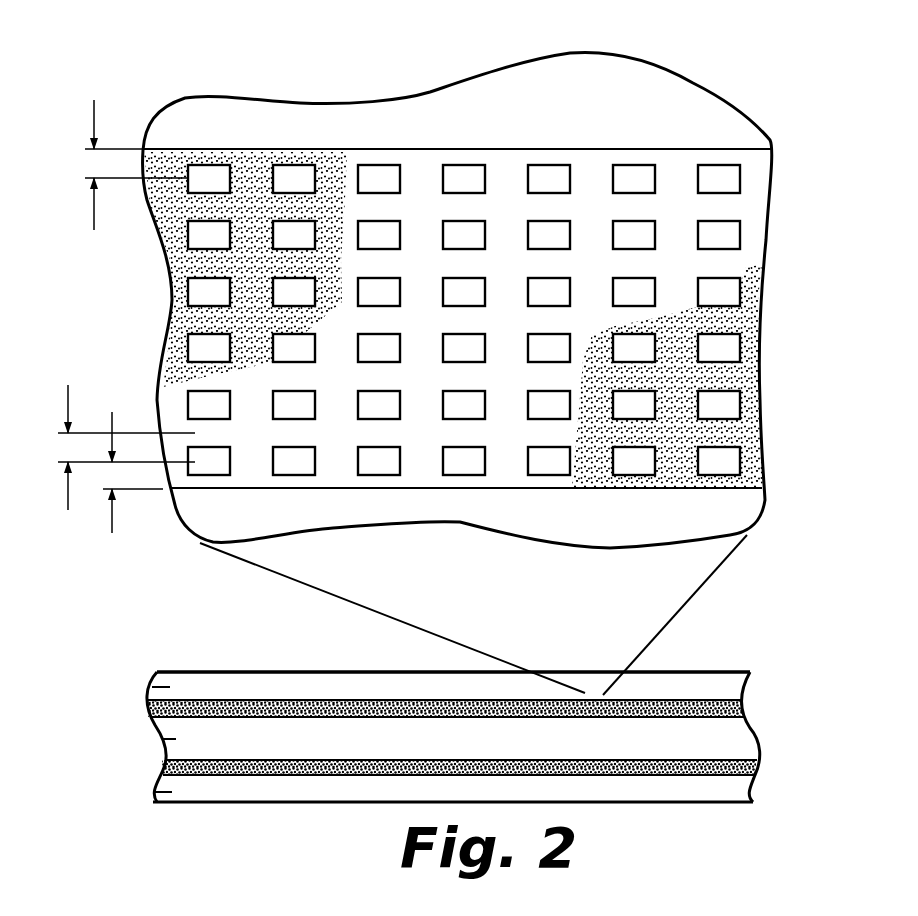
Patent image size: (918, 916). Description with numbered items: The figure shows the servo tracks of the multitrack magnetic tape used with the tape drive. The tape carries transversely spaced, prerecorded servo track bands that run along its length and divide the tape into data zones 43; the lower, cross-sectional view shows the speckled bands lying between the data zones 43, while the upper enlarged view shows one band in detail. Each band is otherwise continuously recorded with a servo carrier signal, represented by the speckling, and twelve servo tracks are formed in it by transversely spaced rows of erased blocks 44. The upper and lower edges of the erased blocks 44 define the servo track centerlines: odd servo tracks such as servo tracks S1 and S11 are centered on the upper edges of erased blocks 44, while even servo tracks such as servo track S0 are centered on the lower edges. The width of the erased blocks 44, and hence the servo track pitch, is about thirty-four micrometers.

The data zones 43 is at (172, 739).
The erased blocks 44 is at (625, 170).
The servo track S0 is at (129, 490).
The servo track S1 is at (123, 434).
The servo track S11 is at (130, 165).